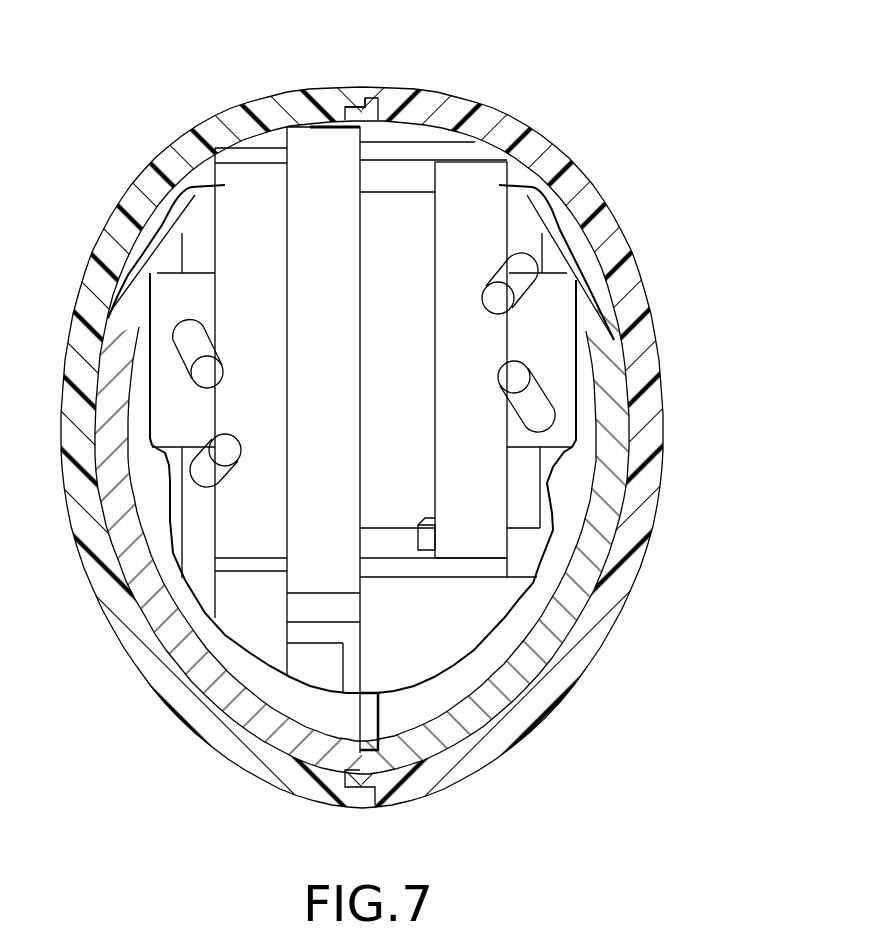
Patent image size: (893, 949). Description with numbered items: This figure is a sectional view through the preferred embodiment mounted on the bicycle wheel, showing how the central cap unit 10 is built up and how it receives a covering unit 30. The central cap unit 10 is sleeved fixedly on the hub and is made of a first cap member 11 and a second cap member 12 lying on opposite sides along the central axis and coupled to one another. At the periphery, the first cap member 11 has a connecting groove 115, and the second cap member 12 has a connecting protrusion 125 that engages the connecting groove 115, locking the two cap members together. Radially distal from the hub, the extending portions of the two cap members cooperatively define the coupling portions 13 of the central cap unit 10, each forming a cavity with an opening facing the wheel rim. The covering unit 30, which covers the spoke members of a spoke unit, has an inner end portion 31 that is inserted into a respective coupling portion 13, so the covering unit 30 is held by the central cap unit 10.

The central cap unit 10 is at (660, 508).
The first cap member 11 is at (178, 192).
The second cap member 12 is at (602, 227).
The coupling portion 13 is at (292, 133).
The connecting groove 115 is at (357, 108).
The connecting protrusion 125 is at (368, 111).
The covering unit 30 is at (632, 417).
The inner end portion 31 is at (613, 343).